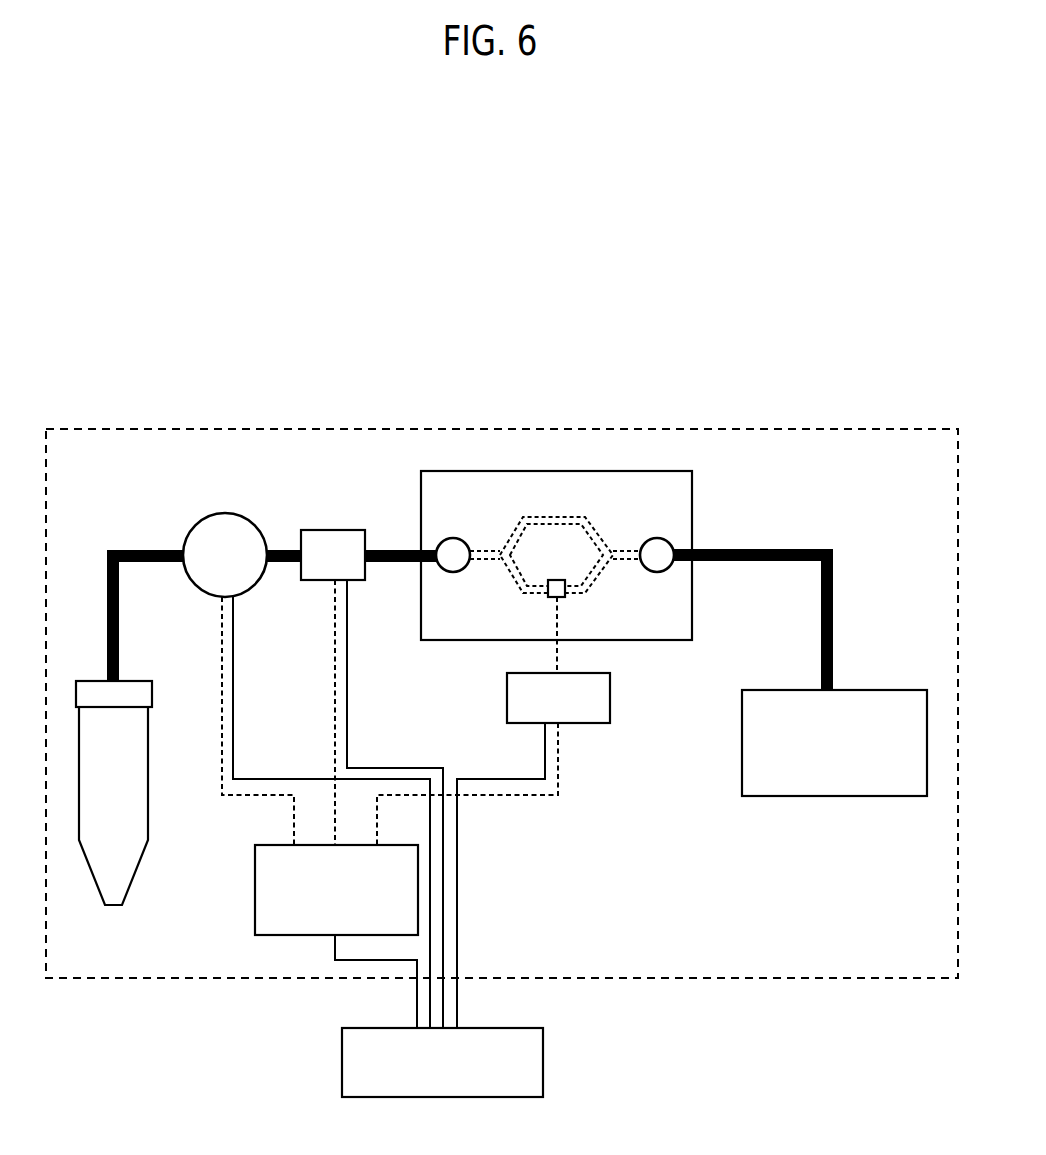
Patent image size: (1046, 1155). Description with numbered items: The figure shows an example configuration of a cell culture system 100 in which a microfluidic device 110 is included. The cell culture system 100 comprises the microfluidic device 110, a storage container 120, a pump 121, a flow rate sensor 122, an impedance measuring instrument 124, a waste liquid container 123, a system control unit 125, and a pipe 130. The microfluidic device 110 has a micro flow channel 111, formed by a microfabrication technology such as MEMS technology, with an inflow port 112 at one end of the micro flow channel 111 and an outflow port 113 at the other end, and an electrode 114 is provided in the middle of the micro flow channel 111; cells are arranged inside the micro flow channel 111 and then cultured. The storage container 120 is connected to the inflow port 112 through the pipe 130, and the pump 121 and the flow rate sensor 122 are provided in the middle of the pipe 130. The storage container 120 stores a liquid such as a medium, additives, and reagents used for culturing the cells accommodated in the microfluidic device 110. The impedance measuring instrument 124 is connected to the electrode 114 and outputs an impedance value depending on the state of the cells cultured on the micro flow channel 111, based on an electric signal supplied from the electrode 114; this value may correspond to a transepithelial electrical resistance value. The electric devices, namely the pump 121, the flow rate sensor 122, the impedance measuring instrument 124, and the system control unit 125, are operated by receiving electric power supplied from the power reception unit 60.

The cell culture system 100 is at (514, 428).
The pipe 130 is at (135, 550).
The storage container 120 is at (113, 906).
The pump 121 is at (226, 516).
The flow rate sensor 122 is at (335, 530).
The microfluidic device 110 is at (692, 604).
The micro flow channel 111 is at (553, 517).
The inflow port 112 is at (453, 538).
The outflow port 113 is at (657, 538).
The electrode 114 is at (565, 592).
The impedance measuring instrument 124 is at (507, 700).
The system control unit 125 is at (255, 890).
The waste liquid container 123 is at (832, 797).
The power reception unit 60 is at (545, 1057).